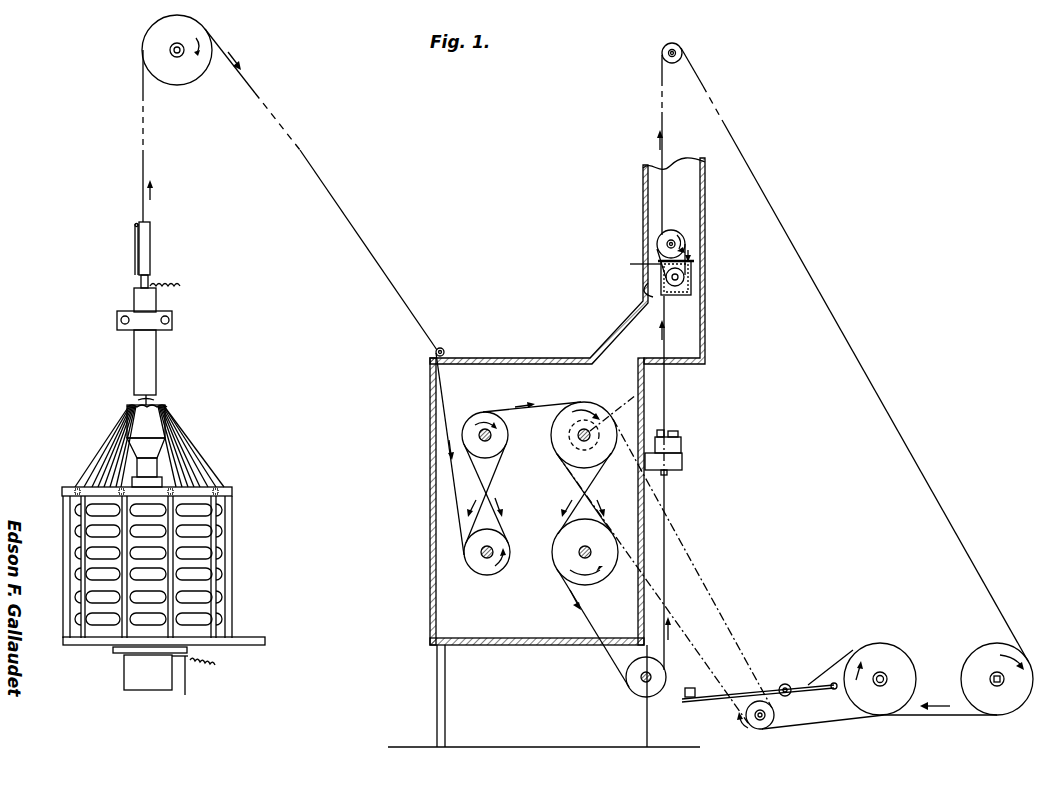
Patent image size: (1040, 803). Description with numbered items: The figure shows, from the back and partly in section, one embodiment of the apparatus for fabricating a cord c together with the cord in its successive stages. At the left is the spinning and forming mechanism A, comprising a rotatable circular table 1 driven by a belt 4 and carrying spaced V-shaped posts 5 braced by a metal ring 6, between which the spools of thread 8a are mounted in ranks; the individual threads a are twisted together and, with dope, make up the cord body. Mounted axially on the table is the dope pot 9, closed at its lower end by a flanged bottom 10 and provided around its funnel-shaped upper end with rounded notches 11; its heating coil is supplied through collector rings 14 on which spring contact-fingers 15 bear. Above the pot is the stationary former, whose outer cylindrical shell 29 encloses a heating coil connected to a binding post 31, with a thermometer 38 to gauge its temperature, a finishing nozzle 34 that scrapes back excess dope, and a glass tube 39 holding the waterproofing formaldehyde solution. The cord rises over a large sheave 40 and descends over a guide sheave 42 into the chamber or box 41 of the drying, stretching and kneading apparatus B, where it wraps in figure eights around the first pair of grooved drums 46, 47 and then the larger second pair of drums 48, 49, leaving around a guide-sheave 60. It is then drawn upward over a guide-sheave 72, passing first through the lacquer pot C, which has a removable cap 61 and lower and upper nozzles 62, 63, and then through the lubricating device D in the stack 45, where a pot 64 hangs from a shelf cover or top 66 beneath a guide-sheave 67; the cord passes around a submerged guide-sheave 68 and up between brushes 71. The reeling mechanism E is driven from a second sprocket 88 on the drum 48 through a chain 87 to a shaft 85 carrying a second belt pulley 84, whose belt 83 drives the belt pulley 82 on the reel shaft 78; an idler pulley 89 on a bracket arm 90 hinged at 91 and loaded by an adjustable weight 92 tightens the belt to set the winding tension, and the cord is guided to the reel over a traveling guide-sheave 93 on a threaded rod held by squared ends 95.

The circular table 1 is at (80, 646).
The belt 4 is at (242, 642).
The V-shaped posts 5 is at (73, 548).
The metal ring 6 is at (226, 490).
The spools of thread 8a is at (196, 555).
The dope pot 9 is at (150, 420).
The flanged bottom 10 is at (158, 690).
The notches 11 is at (168, 410).
The collector rings 14 is at (186, 650).
The spring contact-fingers 15 is at (185, 660).
The outer cylindrical shell 29 is at (156, 355).
The binding post 31 is at (170, 286).
The finishing nozzle 34 is at (150, 282).
The thermometer 38 is at (135, 250).
The glass tube 39 is at (151, 243).
The large sheave 40 is at (190, 75).
The chamber or box 41 is at (530, 358).
The guide sheave 42 is at (436, 351).
The stack 45 is at (706, 328).
The upper grooved drum of first pair 46 is at (478, 430).
The lower grooved drum of first pair 47 is at (478, 564).
The upper grooved drum of second pair 48 is at (556, 434).
The lower grooved drum of second pair 49 is at (564, 560).
The guide-sheave 60 is at (636, 684).
The removable cap 61 is at (680, 433).
The lower nozzle 62 is at (667, 472).
The upper nozzle 63 is at (664, 432).
The pot 64 is at (646, 285).
The shelf cover or top 66 is at (692, 266).
The guide-sheave 67 is at (675, 242).
The guide-sheave 68 is at (692, 283).
The brushes 71 is at (632, 264).
The guide-sheave 72 is at (683, 53).
The shaft 78 is at (881, 686).
The belt pulley 82 is at (893, 664).
The belt 83 is at (838, 665).
The second belt pulley 84 is at (763, 729).
The shaft 85 is at (770, 716).
The chain 87 is at (703, 600).
The second sprocket 88 is at (627, 428).
The idler pulley 89 is at (788, 684).
The bracket arm 90 is at (722, 702).
The hinge 91 is at (835, 690).
The adjustable weight 92 is at (690, 698).
The guide-sheave 93 is at (985, 660).
The squared ends 95 is at (996, 684).
The spinning and forming mechanism A is at (215, 426).
The drying, stretching and kneading apparatus B is at (526, 491).
The pot containing the finishing lacquer solution C is at (704, 456).
The pot containing the lubricating solution D is at (694, 276).
The reeling mechanism E is at (892, 630).
The silk or other threads a is at (100, 470).
The joint b is at (160, 397).
The cord c is at (144, 168).